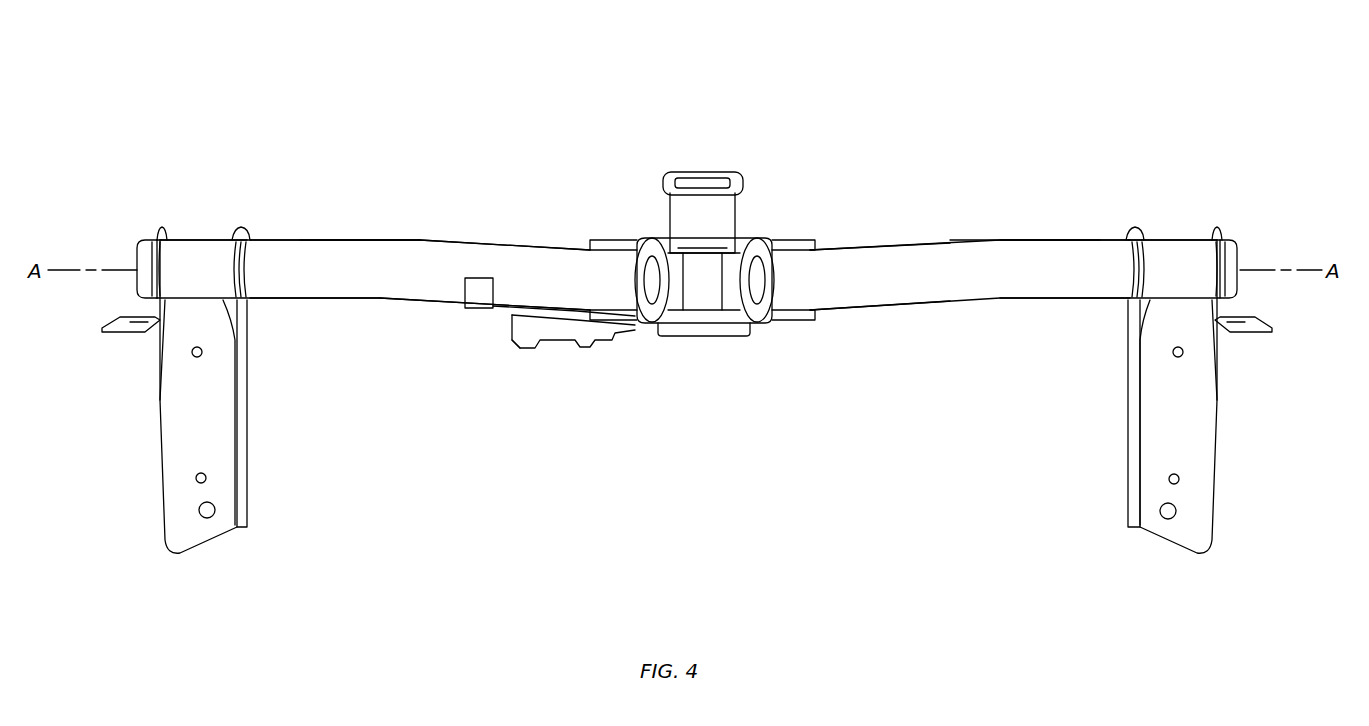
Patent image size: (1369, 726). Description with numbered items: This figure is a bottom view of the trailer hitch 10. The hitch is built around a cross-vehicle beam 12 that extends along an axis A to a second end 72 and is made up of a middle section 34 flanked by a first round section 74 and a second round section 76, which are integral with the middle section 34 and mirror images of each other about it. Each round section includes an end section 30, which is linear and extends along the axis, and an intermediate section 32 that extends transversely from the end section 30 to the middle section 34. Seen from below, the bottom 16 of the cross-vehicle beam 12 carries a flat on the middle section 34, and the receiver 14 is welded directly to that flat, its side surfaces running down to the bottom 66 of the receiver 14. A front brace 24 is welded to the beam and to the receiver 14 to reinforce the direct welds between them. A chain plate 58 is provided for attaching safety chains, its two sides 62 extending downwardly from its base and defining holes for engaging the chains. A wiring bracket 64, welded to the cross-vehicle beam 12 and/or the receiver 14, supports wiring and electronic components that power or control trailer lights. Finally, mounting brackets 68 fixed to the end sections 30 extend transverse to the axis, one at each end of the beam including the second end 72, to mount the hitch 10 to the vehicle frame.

The trailer hitch 10 is at (1092, 126).
The cross-vehicle beam 12 is at (375, 305).
The receiver 14 is at (722, 172).
The bottom 16 is at (540, 275).
The front brace 24 is at (628, 320).
The end sections 30 is at (273, 240).
The intermediate sections 32 is at (427, 240).
The middle section 34 is at (826, 248).
The chain plate 58 is at (718, 340).
The sides 62 is at (650, 320).
The wiring bracket 64 is at (530, 350).
The bottom 66 is at (672, 215).
The mounting brackets 68 is at (165, 500).
The second end 72 is at (262, 318).
The first round section 74 is at (322, 252).
The second round section 76 is at (1048, 248).